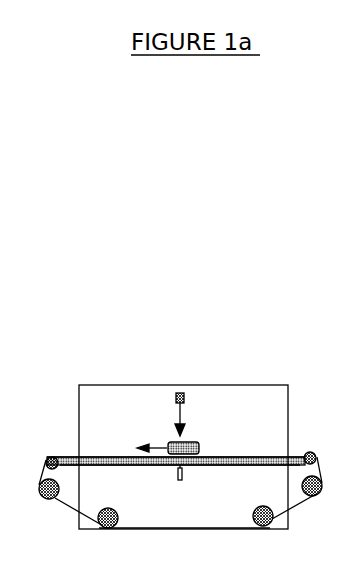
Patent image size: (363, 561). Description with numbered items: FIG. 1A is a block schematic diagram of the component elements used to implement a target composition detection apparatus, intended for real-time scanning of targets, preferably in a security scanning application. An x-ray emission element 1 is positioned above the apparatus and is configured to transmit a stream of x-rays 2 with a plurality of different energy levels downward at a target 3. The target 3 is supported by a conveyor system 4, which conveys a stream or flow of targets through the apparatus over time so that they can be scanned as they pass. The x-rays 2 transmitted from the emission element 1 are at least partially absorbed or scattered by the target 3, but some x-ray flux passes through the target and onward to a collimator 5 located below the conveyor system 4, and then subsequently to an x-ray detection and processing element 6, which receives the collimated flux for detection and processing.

The x-ray emission element 1 is at (183, 390).
The stream of x-rays 2 is at (184, 421).
The target 3 is at (168, 442).
The conveyor system 4 is at (67, 455).
The collimator 5 is at (187, 467).
The x-ray detection and processing element 6 is at (175, 471).